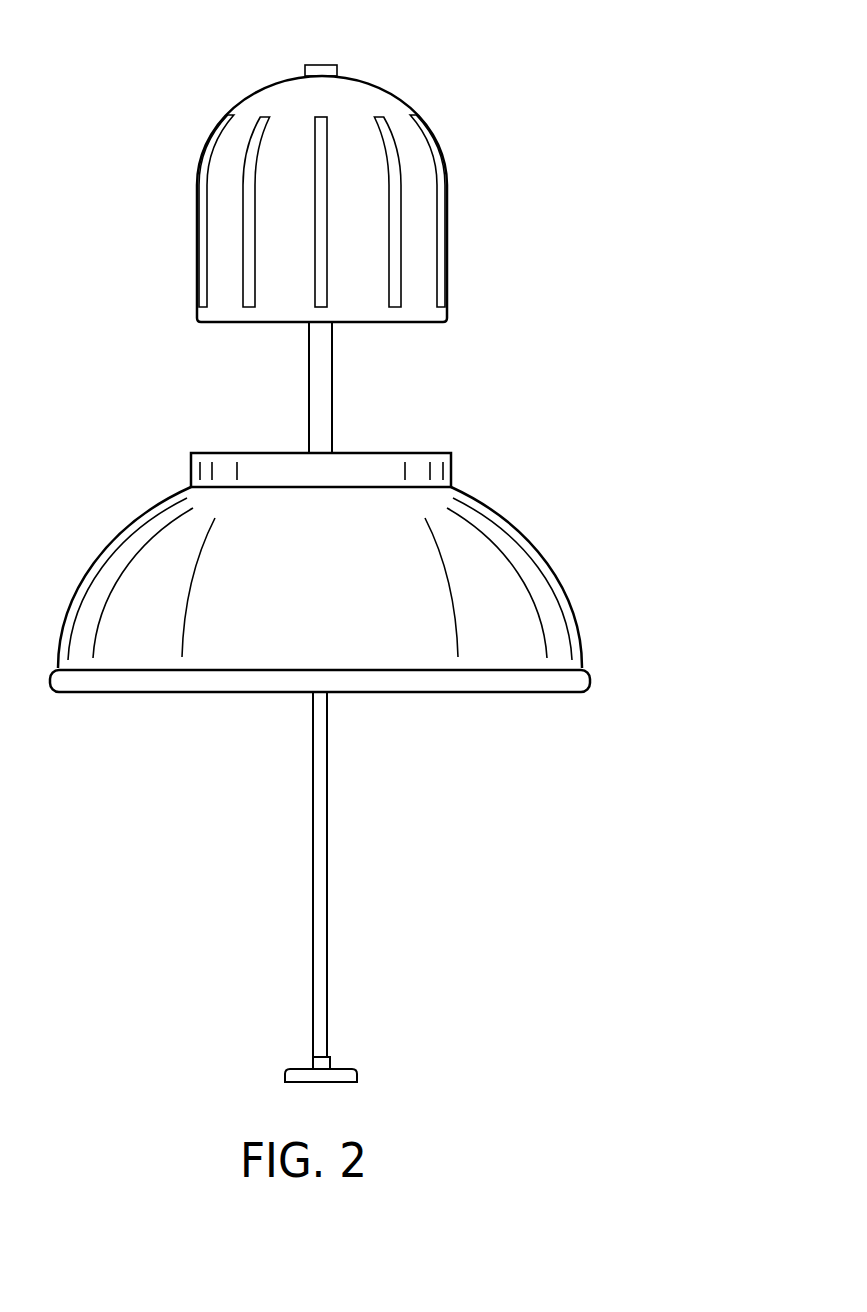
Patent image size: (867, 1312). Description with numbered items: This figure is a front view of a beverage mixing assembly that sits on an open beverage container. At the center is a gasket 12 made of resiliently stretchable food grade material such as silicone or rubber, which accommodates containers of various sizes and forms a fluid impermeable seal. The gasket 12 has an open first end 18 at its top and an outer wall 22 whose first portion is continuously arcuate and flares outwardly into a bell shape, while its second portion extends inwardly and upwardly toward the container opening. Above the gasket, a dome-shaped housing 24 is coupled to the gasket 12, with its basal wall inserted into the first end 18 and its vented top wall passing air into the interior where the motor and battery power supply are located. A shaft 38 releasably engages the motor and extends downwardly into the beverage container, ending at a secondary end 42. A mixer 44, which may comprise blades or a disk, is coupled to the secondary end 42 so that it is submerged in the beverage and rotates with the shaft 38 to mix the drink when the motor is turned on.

The gasket 12 is at (568, 593).
The first end 18 is at (417, 452).
The outer wall 22 is at (505, 532).
The housing 24 is at (372, 82).
The shaft 38 is at (325, 817).
The secondary end 42 is at (325, 1057).
The mixer 44 is at (295, 1073).